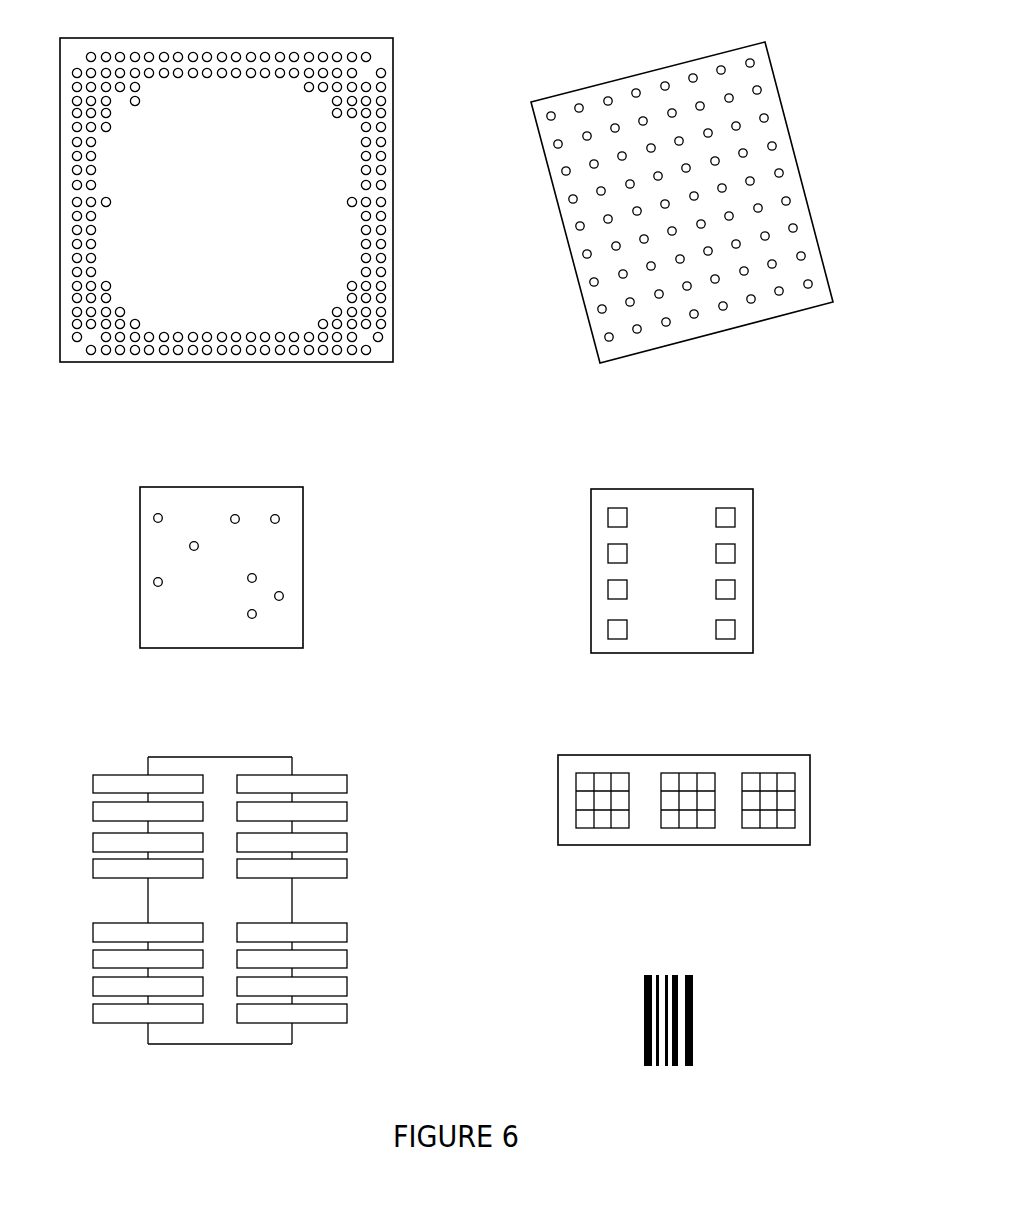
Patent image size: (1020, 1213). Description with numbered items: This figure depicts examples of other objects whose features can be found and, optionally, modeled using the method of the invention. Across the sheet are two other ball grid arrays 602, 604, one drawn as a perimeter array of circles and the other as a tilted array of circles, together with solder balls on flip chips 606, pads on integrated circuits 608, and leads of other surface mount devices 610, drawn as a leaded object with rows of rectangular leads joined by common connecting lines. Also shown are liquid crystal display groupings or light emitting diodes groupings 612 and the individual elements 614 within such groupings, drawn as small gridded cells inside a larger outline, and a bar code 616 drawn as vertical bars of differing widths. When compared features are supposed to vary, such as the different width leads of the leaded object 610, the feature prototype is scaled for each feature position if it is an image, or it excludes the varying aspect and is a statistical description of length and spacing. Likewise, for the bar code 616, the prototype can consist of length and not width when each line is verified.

The ball grid array 602 is at (384, 383).
The ball grid array 604 is at (870, 352).
The solder balls on flip chip 606 is at (321, 569).
The pads on integrated circuit 608 is at (778, 582).
The leads of surface mount device 610 is at (380, 903).
The liquid crystal display grouping or light emitting diode grouping 612 is at (704, 774).
The elements within liquid crystal display or light emitting diode grouping 614 is at (787, 783).
The bar code 616 is at (722, 1017).